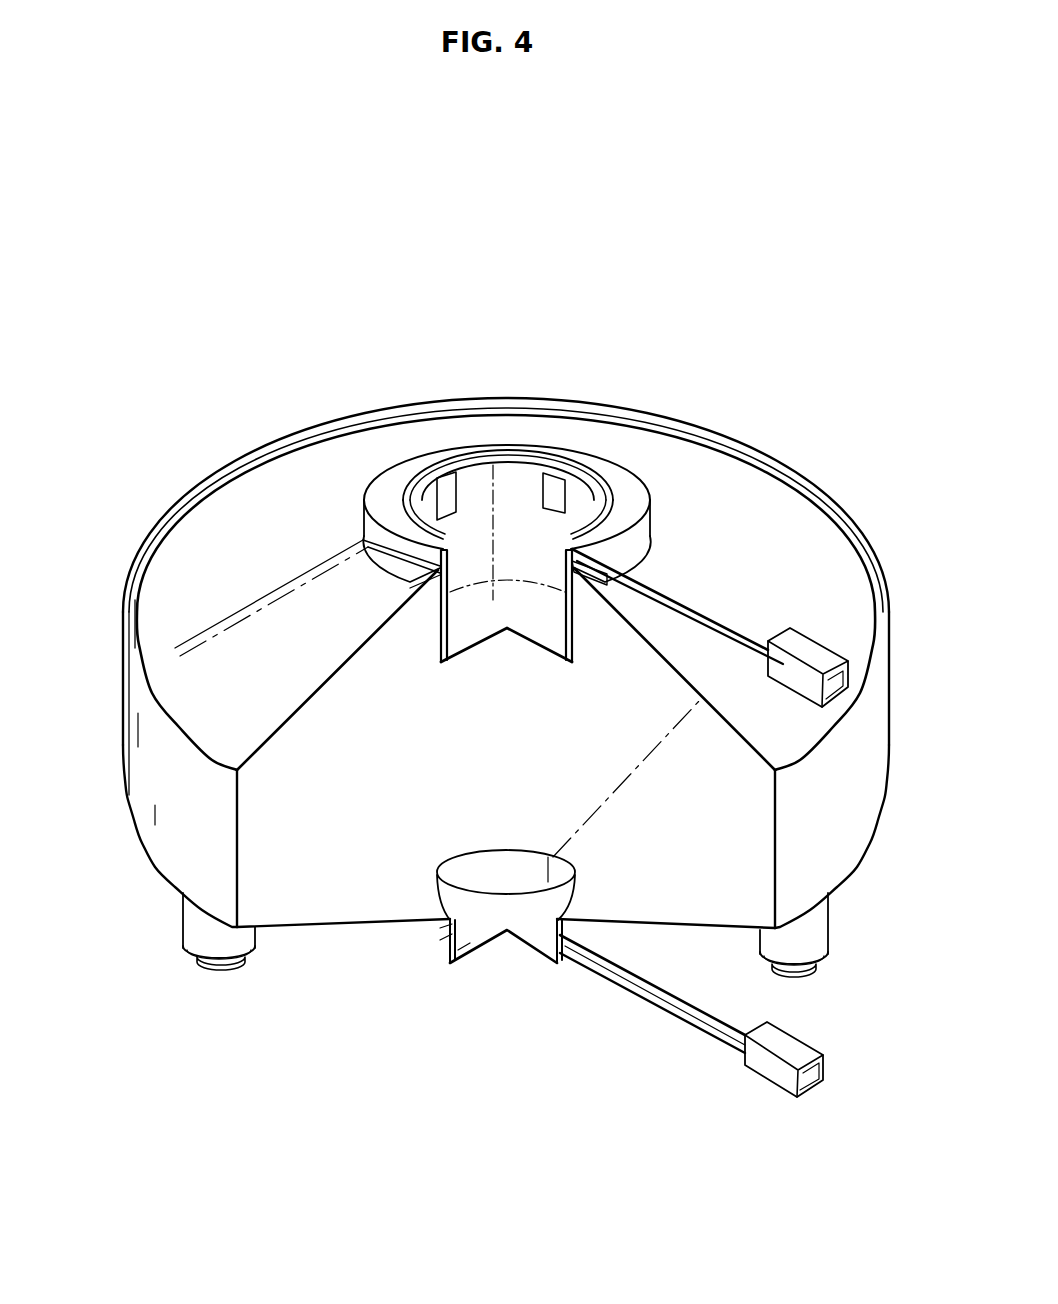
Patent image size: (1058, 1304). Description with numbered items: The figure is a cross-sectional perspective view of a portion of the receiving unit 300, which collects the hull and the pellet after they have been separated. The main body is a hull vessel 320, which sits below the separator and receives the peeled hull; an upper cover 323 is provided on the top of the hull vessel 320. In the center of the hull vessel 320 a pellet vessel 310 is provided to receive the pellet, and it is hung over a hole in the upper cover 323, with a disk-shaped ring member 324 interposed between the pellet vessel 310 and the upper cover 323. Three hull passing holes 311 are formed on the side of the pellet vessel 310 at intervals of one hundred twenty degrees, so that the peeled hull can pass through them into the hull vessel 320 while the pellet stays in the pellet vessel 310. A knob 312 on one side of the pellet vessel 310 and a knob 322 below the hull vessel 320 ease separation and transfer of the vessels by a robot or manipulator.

The receiving unit 300 is at (117, 208).
The pellet vessel 310 is at (428, 635).
The hull passing hole 311 is at (540, 488).
The knob 312 is at (735, 632).
The hull vessel 320 is at (185, 860).
The knob 322 is at (774, 1072).
The upper cover 323 is at (245, 492).
The disk-shaped ring member 324 is at (388, 500).